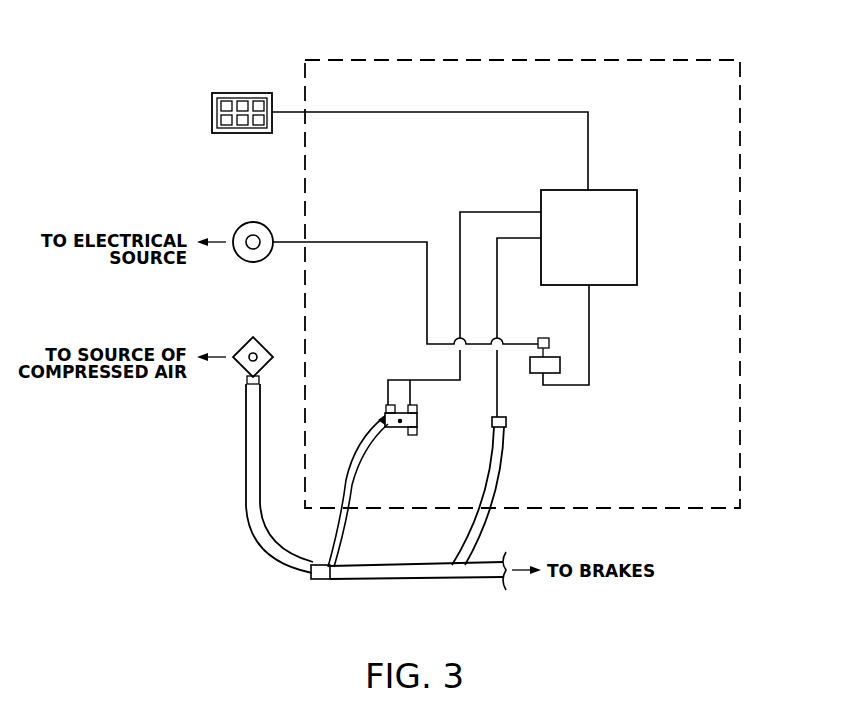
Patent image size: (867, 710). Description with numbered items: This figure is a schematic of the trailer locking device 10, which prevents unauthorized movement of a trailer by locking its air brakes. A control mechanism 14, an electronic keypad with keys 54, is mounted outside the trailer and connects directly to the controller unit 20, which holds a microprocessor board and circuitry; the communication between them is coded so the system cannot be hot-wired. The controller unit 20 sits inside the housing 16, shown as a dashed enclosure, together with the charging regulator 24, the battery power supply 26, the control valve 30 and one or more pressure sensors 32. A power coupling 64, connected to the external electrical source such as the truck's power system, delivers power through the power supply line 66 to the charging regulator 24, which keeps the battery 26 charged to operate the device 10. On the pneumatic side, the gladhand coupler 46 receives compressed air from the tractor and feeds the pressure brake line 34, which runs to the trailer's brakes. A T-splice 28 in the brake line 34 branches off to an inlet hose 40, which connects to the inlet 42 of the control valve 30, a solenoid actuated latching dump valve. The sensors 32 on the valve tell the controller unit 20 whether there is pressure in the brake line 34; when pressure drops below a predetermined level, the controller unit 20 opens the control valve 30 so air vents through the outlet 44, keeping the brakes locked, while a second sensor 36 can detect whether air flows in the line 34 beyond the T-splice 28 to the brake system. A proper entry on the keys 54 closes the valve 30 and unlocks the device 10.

The trailer locking device 10 is at (790, 141).
The control mechanism 14 is at (241, 86).
The housing 16 is at (748, 376).
The controller unit 20 is at (616, 218).
The charging regulator 24 is at (549, 343).
The power supply 26 is at (560, 366).
The T-splice 28 is at (318, 581).
The control valve 30 is at (418, 420).
The pressure sensor 32 is at (418, 409).
The pressure brake line 34 is at (256, 452).
The second sensor 36 is at (507, 421).
The inlet hose 40 is at (349, 536).
The inlet 42 is at (378, 416).
The outlet 44 is at (400, 424).
The gladhand coupler 46 is at (242, 340).
The keys 54 is at (228, 126).
The power coupling 64 is at (243, 226).
The power supply line 66 is at (365, 240).